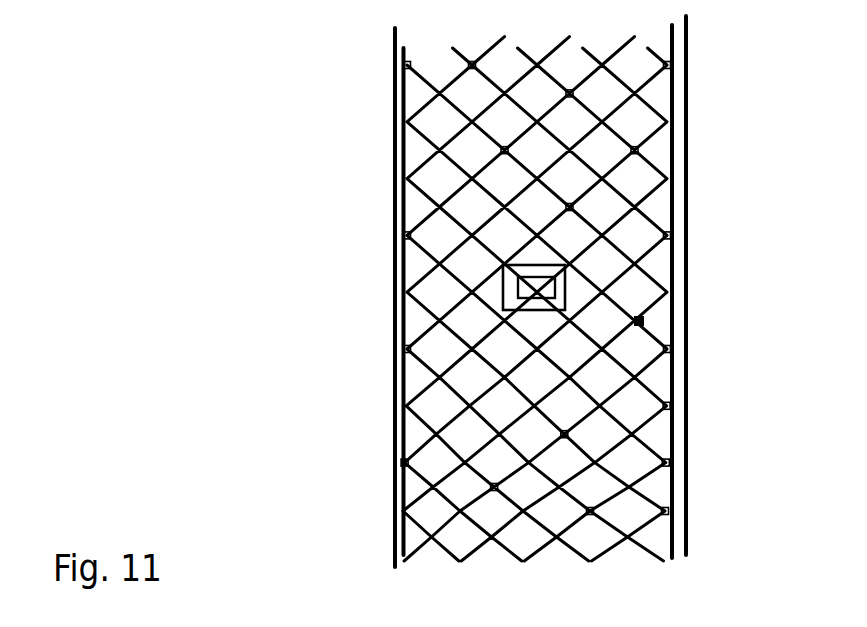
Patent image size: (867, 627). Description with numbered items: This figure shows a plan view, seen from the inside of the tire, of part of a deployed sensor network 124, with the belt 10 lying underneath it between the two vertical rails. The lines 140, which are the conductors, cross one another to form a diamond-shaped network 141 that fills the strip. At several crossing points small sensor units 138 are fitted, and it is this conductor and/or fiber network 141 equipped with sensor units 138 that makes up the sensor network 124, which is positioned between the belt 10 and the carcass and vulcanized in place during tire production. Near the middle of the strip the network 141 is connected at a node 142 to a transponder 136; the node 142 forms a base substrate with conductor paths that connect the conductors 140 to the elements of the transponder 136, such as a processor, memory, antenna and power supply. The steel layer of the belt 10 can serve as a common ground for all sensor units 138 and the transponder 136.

The belt 10 is at (680, 92).
The sensor network 124 is at (418, 152).
The transponder 136 is at (520, 287).
The sensor unit 138 is at (570, 205).
The line 140 is at (668, 366).
The diamond-shaped network 141 is at (624, 301).
The node 142 is at (529, 310).